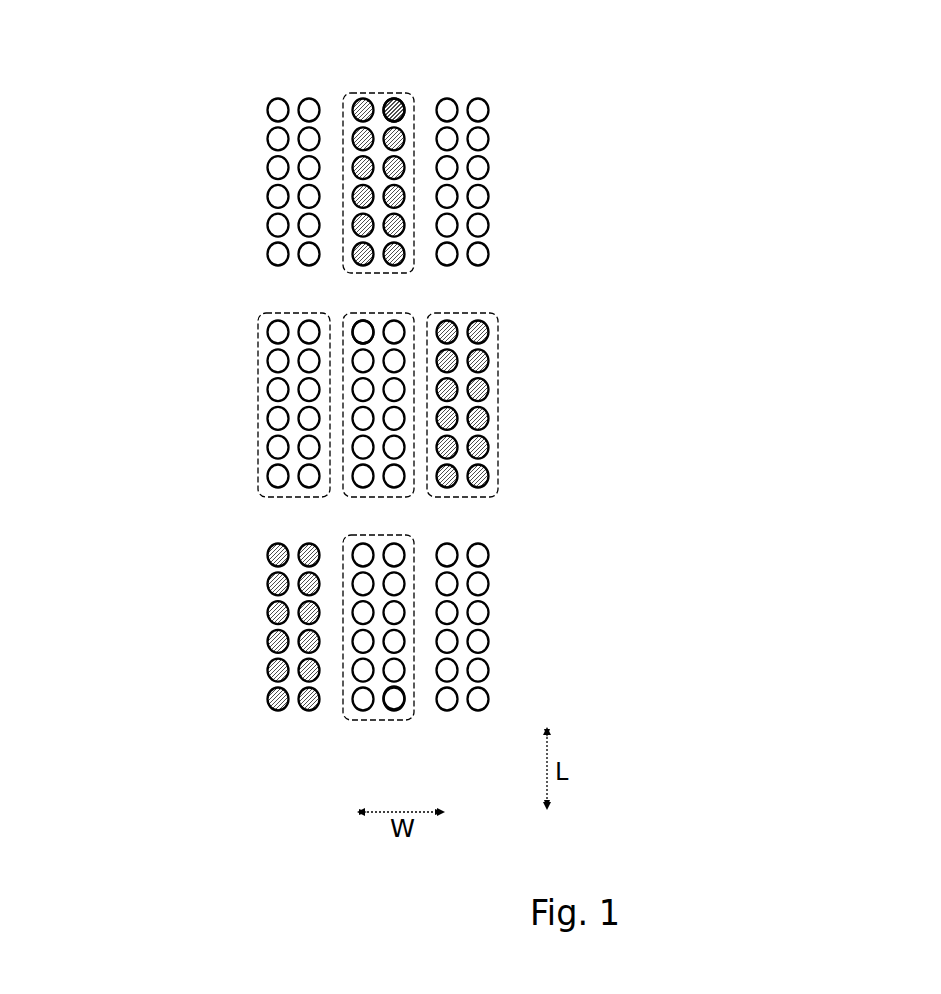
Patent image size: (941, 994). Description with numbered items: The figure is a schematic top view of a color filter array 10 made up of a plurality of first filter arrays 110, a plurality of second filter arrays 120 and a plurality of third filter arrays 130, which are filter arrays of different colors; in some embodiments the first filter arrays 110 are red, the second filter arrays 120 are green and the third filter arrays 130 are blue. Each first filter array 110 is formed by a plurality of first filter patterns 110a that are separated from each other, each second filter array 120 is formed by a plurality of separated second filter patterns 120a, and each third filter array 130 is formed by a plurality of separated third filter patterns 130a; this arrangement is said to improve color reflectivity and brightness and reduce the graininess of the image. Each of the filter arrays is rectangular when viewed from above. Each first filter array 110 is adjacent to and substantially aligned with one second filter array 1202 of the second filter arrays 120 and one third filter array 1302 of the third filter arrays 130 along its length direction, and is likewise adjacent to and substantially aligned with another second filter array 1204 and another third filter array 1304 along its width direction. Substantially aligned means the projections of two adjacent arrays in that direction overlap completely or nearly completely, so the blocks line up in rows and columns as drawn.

The color filter array 10 is at (92, 43).
The first filter array 110 is at (364, 376).
The first filter pattern 110a is at (362, 330).
The second filter array 120 is at (855, 100).
The second filter array 1202 is at (385, 659).
The second filter array 1204 is at (258, 405).
The second filter pattern 120a is at (394, 700).
The third filter array 130 is at (855, 240).
The third filter array 1302 is at (397, 151).
The third filter array 1304 is at (498, 405).
The third filter pattern 130a is at (395, 108).